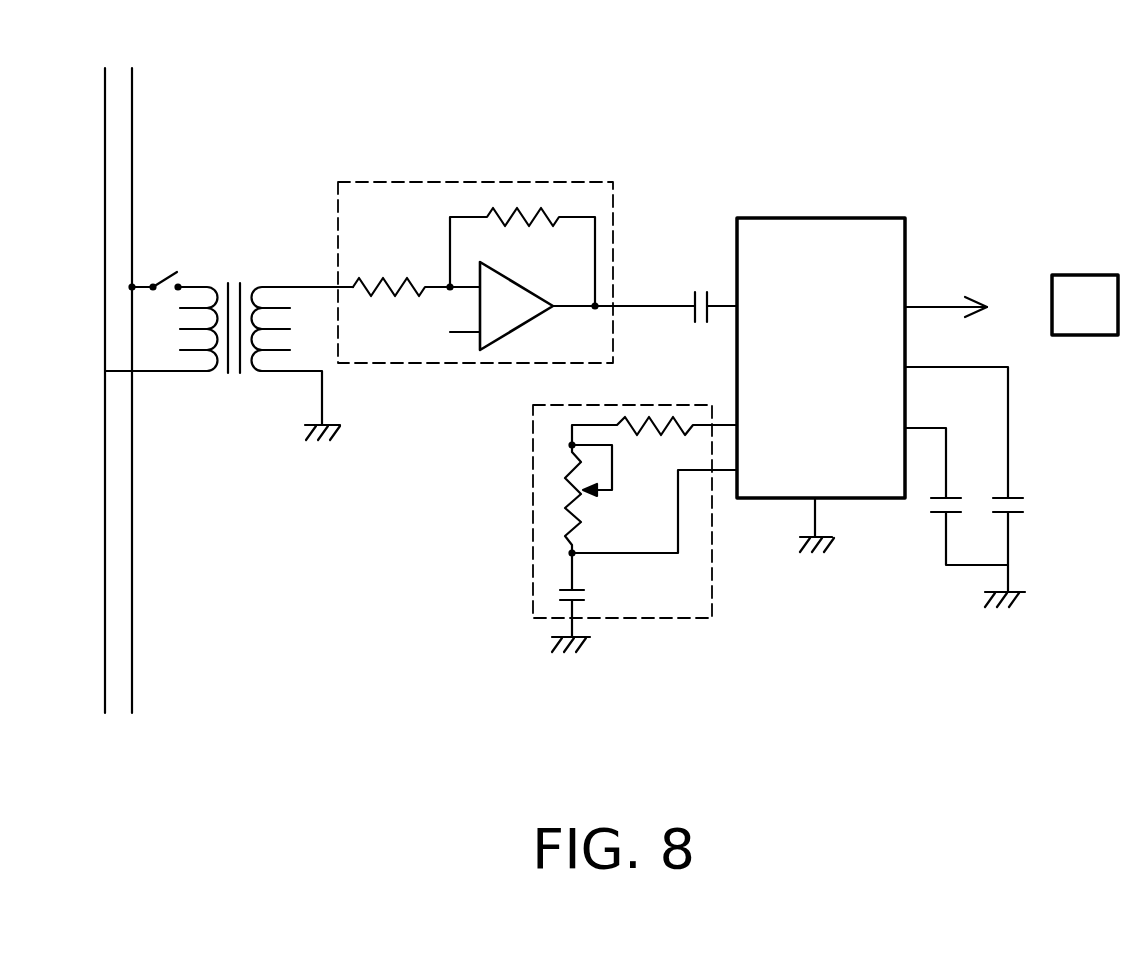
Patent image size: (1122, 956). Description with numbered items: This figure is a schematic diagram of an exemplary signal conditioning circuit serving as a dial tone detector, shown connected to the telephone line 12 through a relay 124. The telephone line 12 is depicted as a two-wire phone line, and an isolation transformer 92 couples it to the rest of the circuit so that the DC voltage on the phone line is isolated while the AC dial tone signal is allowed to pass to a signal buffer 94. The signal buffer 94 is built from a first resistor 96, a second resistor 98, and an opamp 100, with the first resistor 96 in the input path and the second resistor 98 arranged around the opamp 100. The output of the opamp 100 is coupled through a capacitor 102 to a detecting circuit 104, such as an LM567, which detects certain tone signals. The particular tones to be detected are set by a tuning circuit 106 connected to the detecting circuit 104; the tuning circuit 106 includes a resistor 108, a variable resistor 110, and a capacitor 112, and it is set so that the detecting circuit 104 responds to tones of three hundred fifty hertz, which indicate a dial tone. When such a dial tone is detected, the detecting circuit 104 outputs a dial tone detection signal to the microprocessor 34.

The telephone line 12 is at (105, 93).
The relay 124 is at (165, 276).
The isolation transformer 92 is at (247, 292).
The signal buffer 94 is at (492, 272).
The first resistor 96 is at (418, 283).
The second resistor 98 is at (516, 222).
The opamp 100 is at (524, 322).
The capacitor 102 is at (692, 296).
The detecting circuit 104 is at (809, 218).
The microprocessor 34 is at (1085, 305).
The tuning circuit 106 is at (649, 535).
The resistor 108 is at (686, 436).
The variable resistor 110 is at (596, 493).
The capacitor 112 is at (580, 605).